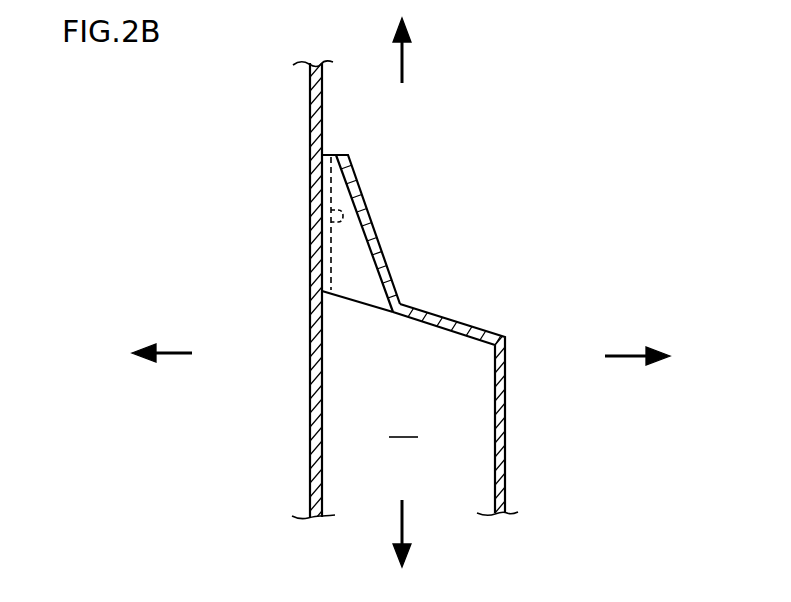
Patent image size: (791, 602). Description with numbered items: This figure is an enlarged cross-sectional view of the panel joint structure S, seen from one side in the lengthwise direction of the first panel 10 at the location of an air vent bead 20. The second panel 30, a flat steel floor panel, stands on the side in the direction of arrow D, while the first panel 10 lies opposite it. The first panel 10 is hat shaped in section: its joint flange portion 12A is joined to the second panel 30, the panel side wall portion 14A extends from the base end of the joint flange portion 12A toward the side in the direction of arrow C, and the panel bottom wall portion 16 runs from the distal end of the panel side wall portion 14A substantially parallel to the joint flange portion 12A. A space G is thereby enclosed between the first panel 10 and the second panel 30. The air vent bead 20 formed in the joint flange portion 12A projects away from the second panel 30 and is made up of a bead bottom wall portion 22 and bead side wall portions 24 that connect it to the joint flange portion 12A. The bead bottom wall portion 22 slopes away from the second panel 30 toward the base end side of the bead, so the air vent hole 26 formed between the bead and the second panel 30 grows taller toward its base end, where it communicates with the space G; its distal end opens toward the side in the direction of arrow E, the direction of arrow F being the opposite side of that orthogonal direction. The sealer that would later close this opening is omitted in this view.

The second panel 30 is at (309, 102).
The air vent bead 20 is at (338, 249).
The bead bottom wall portion 22 is at (380, 248).
The bead side wall portion 24 is at (355, 287).
The air vent hole 26 is at (345, 252).
The joint flange portion 12A is at (330, 216).
The first panel 10 is at (493, 372).
The panel side wall portion 14A is at (440, 308).
The panel bottom wall portion 16 is at (506, 444).
The panel joint structure S is at (534, 167).
The space G is at (403, 424).
The direction of arrow E is at (404, 57).
The direction of arrow F is at (404, 530).
The direction of arrow D is at (174, 360).
The direction of arrow C is at (631, 362).